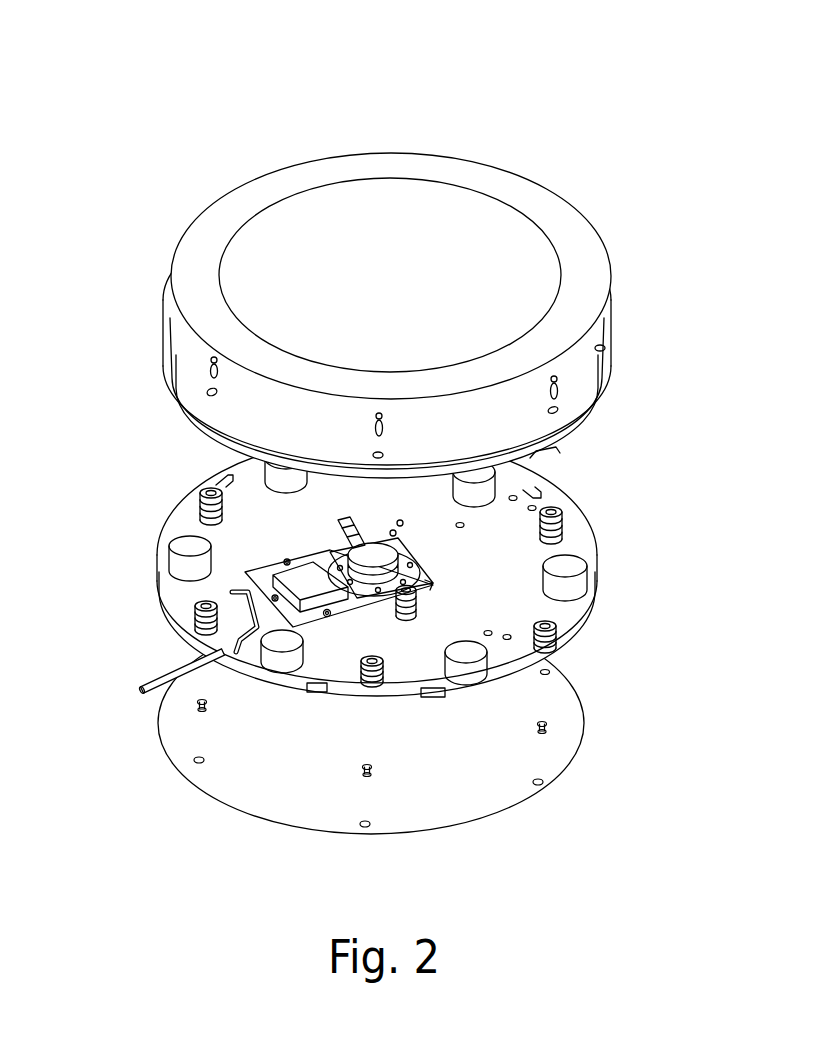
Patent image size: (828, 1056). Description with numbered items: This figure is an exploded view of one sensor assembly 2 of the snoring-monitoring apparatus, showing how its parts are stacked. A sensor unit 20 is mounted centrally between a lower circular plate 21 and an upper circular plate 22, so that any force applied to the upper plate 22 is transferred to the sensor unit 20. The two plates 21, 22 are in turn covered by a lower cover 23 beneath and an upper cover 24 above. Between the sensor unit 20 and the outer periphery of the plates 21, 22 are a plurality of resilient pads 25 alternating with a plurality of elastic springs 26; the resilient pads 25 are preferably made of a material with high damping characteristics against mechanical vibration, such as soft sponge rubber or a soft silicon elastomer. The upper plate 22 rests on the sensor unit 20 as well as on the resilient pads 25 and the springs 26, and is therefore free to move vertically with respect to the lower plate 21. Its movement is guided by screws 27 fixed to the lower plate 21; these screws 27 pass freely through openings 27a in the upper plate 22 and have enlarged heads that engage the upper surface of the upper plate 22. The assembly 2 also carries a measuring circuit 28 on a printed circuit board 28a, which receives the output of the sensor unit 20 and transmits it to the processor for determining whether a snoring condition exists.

The sensor assembly 2 is at (372, 106).
The sensor unit 20 is at (373, 540).
The lower circular plate 21 is at (167, 605).
The upper circular plate 22 is at (180, 328).
The lower cover 23 is at (175, 750).
The upper cover 24 is at (218, 203).
The resilient pads 25 is at (175, 563).
The elastic springs 26 is at (198, 503).
The screws 27 is at (208, 363).
The openings 27a is at (211, 394).
The measuring circuit 28 is at (303, 590).
The printed circuit board 28a is at (428, 578).